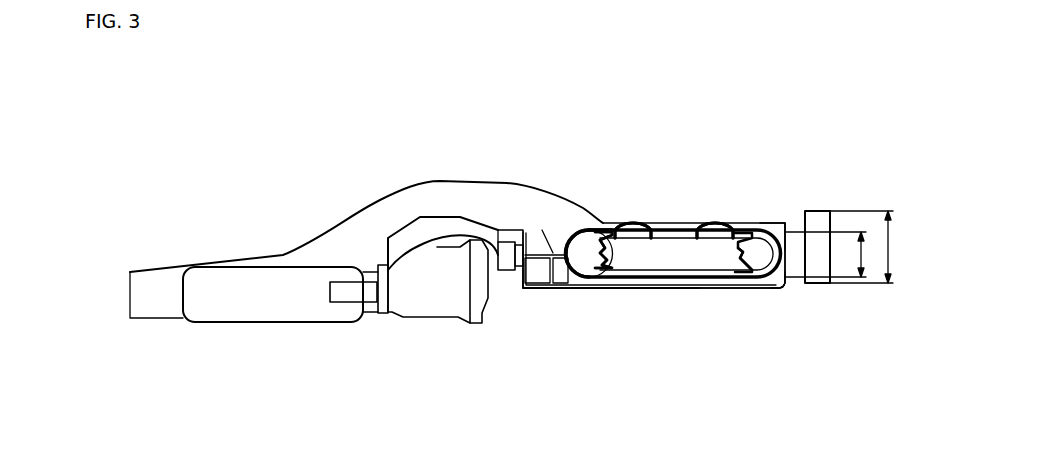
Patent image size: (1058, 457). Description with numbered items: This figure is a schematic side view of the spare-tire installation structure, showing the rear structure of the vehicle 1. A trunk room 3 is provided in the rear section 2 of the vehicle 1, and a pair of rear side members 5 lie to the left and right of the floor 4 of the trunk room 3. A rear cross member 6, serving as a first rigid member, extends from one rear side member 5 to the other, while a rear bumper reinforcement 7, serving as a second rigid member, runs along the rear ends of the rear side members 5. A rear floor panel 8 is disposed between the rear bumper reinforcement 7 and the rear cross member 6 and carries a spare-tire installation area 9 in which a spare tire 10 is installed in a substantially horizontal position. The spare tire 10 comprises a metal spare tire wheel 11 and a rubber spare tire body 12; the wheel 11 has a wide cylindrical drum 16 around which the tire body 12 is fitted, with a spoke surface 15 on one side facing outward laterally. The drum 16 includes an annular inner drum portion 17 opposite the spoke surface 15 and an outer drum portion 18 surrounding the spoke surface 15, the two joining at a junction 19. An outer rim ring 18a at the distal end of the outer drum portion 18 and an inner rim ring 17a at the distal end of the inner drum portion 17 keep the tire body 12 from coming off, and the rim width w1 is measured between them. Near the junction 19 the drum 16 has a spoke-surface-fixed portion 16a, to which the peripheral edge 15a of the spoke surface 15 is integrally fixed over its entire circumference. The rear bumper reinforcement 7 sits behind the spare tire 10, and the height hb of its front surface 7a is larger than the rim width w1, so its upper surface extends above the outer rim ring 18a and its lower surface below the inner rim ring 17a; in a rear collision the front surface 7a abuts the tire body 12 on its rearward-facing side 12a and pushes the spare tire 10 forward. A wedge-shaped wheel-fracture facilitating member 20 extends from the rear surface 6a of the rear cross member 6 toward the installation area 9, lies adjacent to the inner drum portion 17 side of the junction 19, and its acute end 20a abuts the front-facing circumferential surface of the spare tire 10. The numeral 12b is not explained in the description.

The vehicle 1 is at (163, 240).
The rear section 2 is at (782, 322).
The trunk room 3 is at (674, 183).
The floor 4 is at (752, 237).
The rear side member 5 is at (783, 258).
The rear cross member 6 is at (531, 283).
The rear surface 6a is at (546, 240).
The rear bumper reinforcement 7 is at (828, 207).
The front surface 7a is at (797, 288).
The rear floor panel 8 is at (641, 298).
The spare-tire installation area 9 is at (682, 272).
The spare tire 10 is at (687, 135).
The spare tire wheel 11 is at (716, 212).
The spare tire body 12 is at (754, 214).
The side facing the rear of the vehicle 12a is at (790, 226).
The housing bottom portion 12b is at (552, 288).
The spoke surface 15 is at (627, 226).
The peripheral edge 15a is at (735, 270).
The drum 16 is at (568, 379).
The spoke-surface-fixed portion 16a is at (743, 266).
The inner drum portion 17 is at (610, 268).
The inner rim ring 17a is at (598, 272).
The outer drum portion 18 is at (616, 268).
The outer rim ring 18a is at (590, 238).
The junction 19 is at (580, 240).
The wheel-fracture facilitating member 20 is at (565, 238).
The acute end 20a is at (572, 238).
The rim width w1 is at (867, 280).
The height of the front surface hb is at (897, 248).